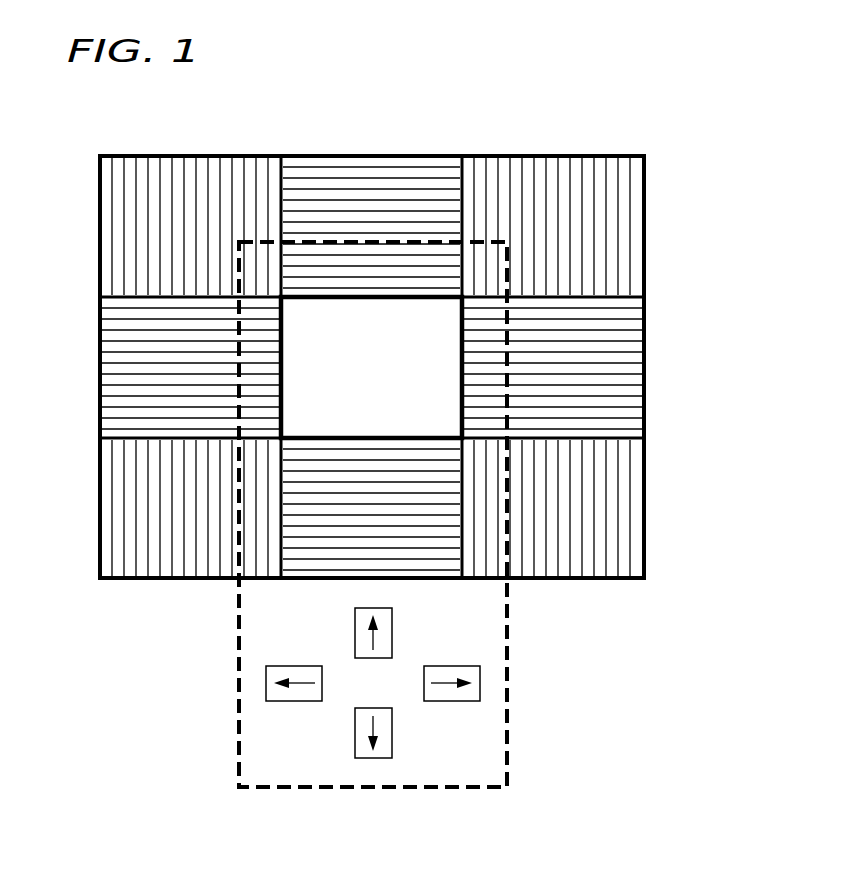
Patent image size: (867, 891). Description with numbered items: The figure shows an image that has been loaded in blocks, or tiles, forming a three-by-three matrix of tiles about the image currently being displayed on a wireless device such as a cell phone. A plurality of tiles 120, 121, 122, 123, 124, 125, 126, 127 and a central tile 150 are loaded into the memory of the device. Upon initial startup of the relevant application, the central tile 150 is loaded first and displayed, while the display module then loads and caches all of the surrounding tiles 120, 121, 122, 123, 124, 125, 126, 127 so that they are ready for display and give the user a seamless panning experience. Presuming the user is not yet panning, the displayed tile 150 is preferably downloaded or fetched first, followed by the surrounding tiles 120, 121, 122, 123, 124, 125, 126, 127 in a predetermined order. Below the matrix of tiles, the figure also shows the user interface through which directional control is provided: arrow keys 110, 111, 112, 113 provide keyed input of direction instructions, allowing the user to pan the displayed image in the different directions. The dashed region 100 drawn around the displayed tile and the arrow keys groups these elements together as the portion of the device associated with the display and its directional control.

The remote control / input device region 100 is at (512, 730).
The arrow key 110 is at (481, 683).
The arrow key 111 is at (372, 760).
The arrow key 112 is at (265, 685).
The arrow key 113 is at (392, 640).
The tile 120 is at (628, 222).
The tile 121 is at (628, 386).
The tile 122 is at (628, 513).
The tile 123 is at (397, 176).
The tile 124 is at (318, 565).
The tile 125 is at (118, 219).
The tile 126 is at (118, 382).
The tile 127 is at (118, 509).
The central tile 150 is at (357, 405).